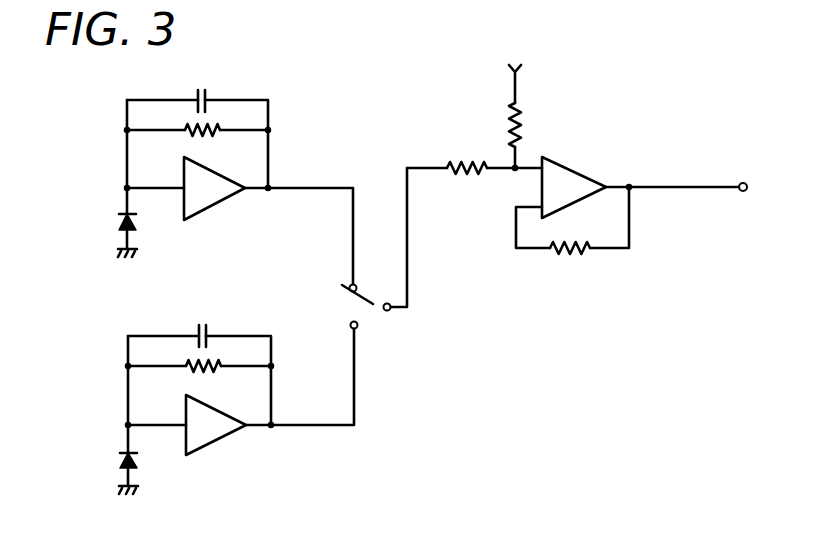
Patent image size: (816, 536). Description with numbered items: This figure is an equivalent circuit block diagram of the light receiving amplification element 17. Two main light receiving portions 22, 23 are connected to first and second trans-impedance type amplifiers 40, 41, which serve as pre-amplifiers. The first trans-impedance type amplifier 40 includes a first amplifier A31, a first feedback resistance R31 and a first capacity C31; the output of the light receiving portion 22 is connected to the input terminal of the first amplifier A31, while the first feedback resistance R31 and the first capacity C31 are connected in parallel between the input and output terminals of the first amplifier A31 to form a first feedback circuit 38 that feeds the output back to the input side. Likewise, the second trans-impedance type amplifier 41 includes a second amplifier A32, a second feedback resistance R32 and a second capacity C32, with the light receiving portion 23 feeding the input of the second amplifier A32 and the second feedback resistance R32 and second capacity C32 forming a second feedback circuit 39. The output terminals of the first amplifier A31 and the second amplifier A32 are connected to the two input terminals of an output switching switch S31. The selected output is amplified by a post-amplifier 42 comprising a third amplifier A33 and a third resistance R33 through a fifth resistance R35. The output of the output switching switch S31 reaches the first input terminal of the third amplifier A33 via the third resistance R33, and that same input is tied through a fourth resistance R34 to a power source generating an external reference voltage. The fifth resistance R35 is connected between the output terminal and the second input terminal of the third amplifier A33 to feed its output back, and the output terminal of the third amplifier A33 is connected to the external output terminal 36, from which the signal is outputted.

The light receiving amplification element 17 is at (579, 157).
The main light receiving portion 22 is at (119, 223).
The main light receiving portion 23 is at (120, 451).
The external output terminal 36 is at (743, 181).
The first feedback circuit 38 is at (122, 100).
The second feedback circuit 39 is at (121, 333).
The first trans-impedance type amplifier 40 is at (206, 167).
The second trans-impedance type amplifier 41 is at (205, 386).
The post-amplifier 42 is at (627, 199).
The first amplifier A31 is at (213, 195).
The second amplifier A32 is at (213, 433).
The third amplifier A33 is at (577, 170).
The first capacity C31 is at (197, 95).
The second capacity C32 is at (197, 326).
The first feedback resistance R31 is at (203, 133).
The second feedback resistance R32 is at (201, 370).
The third resistance R33 is at (457, 162).
The fourth resistance R34 is at (521, 131).
The fifth resistance R35 is at (563, 253).
The output switching switch S31 is at (369, 307).